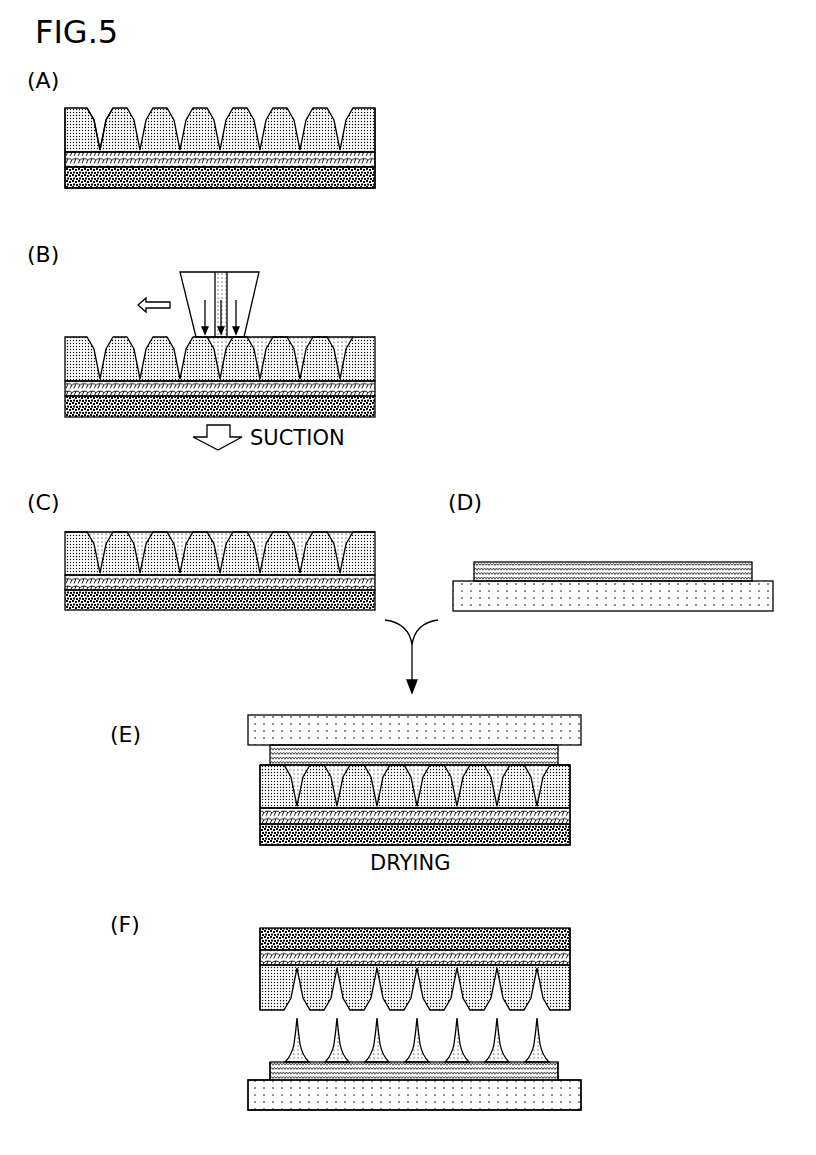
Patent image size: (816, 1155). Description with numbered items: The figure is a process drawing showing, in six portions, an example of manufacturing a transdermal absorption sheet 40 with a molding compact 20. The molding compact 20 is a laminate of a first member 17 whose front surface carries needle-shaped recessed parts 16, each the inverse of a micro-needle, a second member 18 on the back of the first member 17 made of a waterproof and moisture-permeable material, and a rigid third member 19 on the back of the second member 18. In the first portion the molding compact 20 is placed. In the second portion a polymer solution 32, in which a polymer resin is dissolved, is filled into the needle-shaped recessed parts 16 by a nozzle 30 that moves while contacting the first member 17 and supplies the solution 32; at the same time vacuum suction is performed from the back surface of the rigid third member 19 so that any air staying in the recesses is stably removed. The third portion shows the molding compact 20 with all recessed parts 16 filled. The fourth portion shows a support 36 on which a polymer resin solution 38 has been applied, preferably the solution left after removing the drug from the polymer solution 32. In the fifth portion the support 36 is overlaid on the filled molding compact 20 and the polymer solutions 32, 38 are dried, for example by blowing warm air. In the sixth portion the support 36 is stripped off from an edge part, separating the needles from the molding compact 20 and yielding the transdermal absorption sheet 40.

The needle-shaped recessed part 16 is at (90, 108).
The first member 17 is at (376, 129).
The second member 18 is at (376, 159).
The third member 19 is at (376, 179).
The molding compact 20 is at (337, 104).
The nozzle 30 is at (252, 304).
The polymer solution 32 is at (221, 272).
The support 36 is at (612, 611).
The polymer resin solution 38 is at (612, 562).
The transdermal absorption sheet 40 is at (250, 1064).